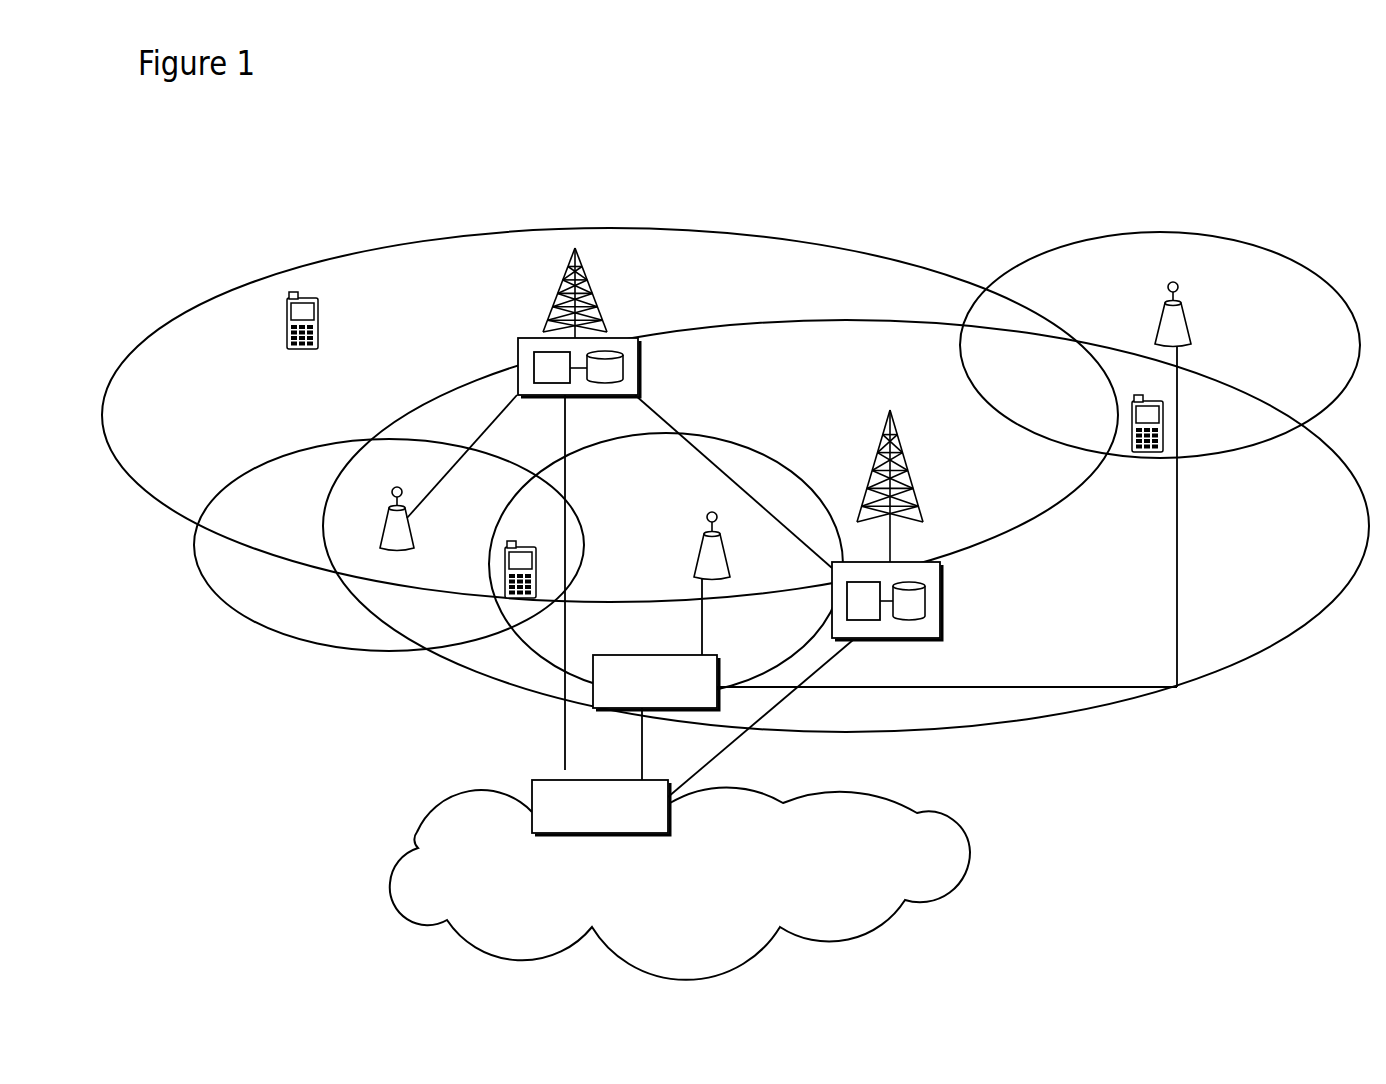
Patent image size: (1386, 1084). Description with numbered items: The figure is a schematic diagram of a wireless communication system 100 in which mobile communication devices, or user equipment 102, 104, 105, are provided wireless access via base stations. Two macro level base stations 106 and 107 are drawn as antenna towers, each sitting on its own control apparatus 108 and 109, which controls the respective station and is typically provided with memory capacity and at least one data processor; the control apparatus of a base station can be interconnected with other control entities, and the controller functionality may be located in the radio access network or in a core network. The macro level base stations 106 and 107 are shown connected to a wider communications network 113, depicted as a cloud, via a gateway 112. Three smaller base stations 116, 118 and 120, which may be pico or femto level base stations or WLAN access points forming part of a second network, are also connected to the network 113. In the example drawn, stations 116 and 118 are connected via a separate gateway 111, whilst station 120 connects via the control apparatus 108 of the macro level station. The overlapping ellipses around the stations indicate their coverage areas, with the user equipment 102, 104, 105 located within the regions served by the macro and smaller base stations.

The wireless communication system 100 is at (198, 278).
The user equipment 102 is at (285, 338).
The user equipment 104 is at (505, 573).
The user equipment 105 is at (1148, 453).
The macro level base station 106 is at (550, 300).
The macro level base station 107 is at (915, 486).
The control apparatus 108 is at (517, 354).
The control apparatus 109 is at (940, 630).
The gateway 111 is at (598, 688).
The gateway 112 is at (534, 780).
The wider communications network 113 is at (448, 843).
The smaller base station 116 is at (1160, 318).
The smaller base station 118 is at (712, 565).
The smaller base station 120 is at (387, 523).